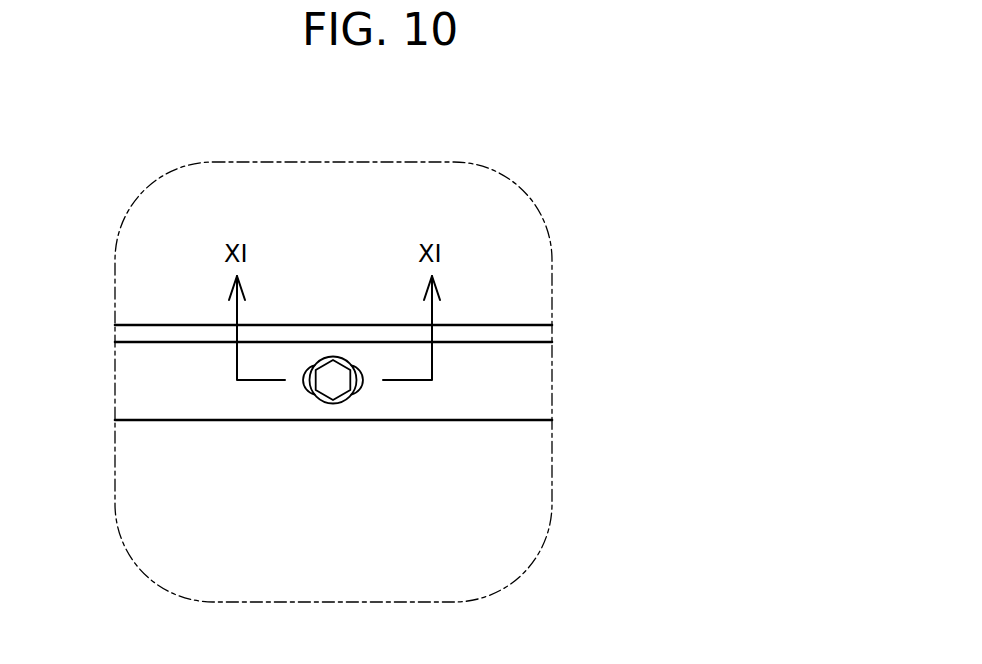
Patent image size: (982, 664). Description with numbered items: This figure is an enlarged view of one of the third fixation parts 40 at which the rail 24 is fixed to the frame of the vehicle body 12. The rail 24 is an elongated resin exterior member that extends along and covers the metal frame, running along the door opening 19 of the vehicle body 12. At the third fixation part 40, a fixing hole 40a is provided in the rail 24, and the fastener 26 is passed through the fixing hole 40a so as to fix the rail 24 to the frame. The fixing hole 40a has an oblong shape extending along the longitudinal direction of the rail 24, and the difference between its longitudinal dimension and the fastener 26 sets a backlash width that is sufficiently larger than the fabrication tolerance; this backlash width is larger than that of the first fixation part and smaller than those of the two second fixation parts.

The third fixation part 40 is at (572, 135).
The fixing hole 40a is at (315, 398).
The fastener 26 is at (337, 357).
The vehicle body 12 is at (500, 333).
The rail 24 is at (510, 388).
The door opening 19 is at (490, 422).